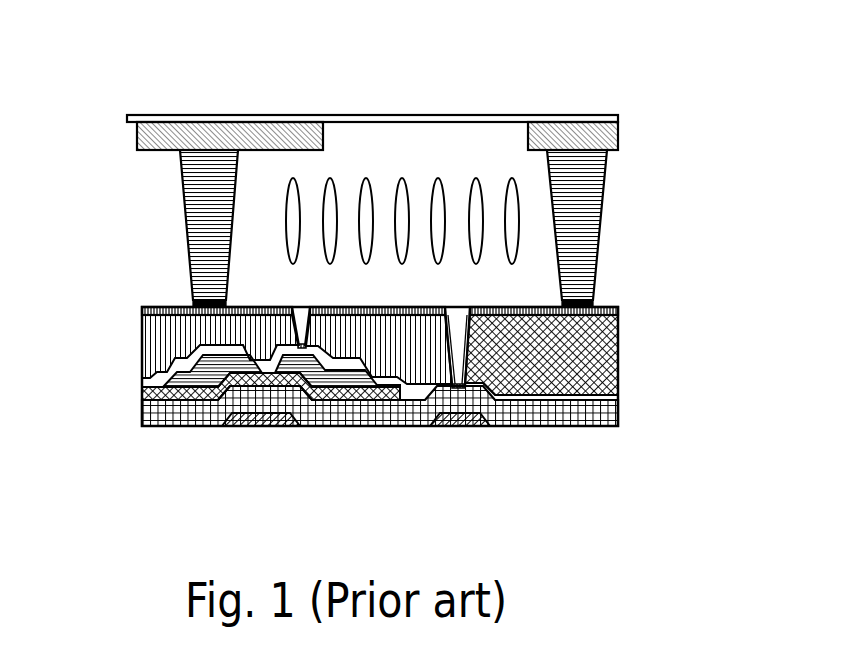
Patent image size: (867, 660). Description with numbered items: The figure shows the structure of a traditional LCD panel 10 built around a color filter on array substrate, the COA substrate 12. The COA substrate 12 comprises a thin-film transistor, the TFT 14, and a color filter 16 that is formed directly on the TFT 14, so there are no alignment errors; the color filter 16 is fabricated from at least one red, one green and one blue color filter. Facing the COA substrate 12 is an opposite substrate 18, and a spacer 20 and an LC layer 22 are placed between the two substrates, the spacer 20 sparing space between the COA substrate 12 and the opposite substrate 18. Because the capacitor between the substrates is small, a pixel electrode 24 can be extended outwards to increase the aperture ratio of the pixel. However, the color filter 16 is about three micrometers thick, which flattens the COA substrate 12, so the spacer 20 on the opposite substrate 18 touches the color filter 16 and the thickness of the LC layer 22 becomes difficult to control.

The LCD panel 10 is at (364, 31).
The color filter on array (COA) substrate 12 is at (391, 410).
The thin-film transistor (TFT) 14 is at (266, 408).
The color filter 16 is at (158, 337).
The opposite substrate 18 is at (102, 112).
The spacer 20 is at (190, 228).
The LC layer 22 is at (518, 217).
The pixel electrode 24 is at (618, 308).